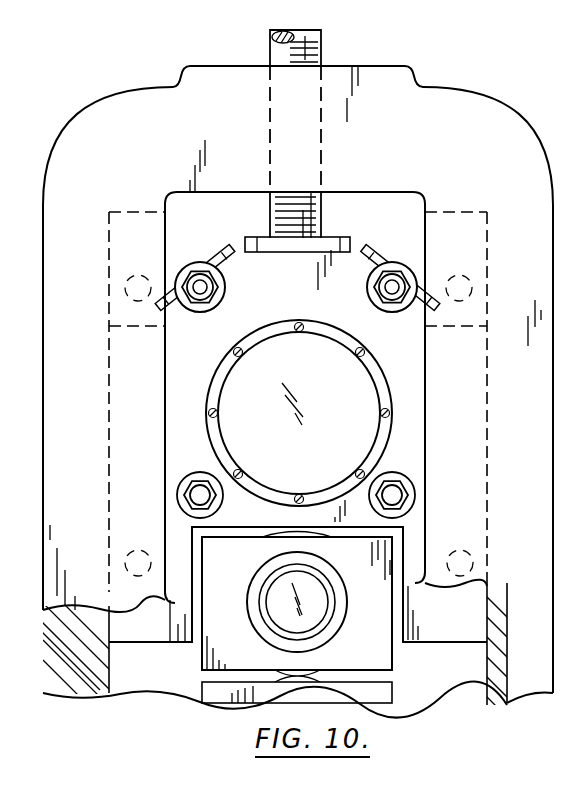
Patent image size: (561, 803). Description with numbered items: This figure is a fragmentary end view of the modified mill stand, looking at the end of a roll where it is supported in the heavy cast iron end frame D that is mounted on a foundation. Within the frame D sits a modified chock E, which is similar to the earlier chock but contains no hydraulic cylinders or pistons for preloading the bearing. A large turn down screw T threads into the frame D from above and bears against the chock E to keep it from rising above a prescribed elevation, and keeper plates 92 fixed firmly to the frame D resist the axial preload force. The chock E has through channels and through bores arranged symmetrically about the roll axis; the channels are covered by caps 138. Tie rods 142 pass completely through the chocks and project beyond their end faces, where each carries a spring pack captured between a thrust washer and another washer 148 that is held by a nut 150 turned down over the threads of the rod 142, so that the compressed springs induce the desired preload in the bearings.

The turn down screw T is at (331, 33).
The end frame D is at (498, 114).
The modified chock E is at (164, 426).
The keeper plate 92 is at (135, 512).
The cap 138 is at (186, 251).
The washer 148 is at (222, 283).
The nut 150 is at (215, 295).
The tie rod 142 is at (200, 291).